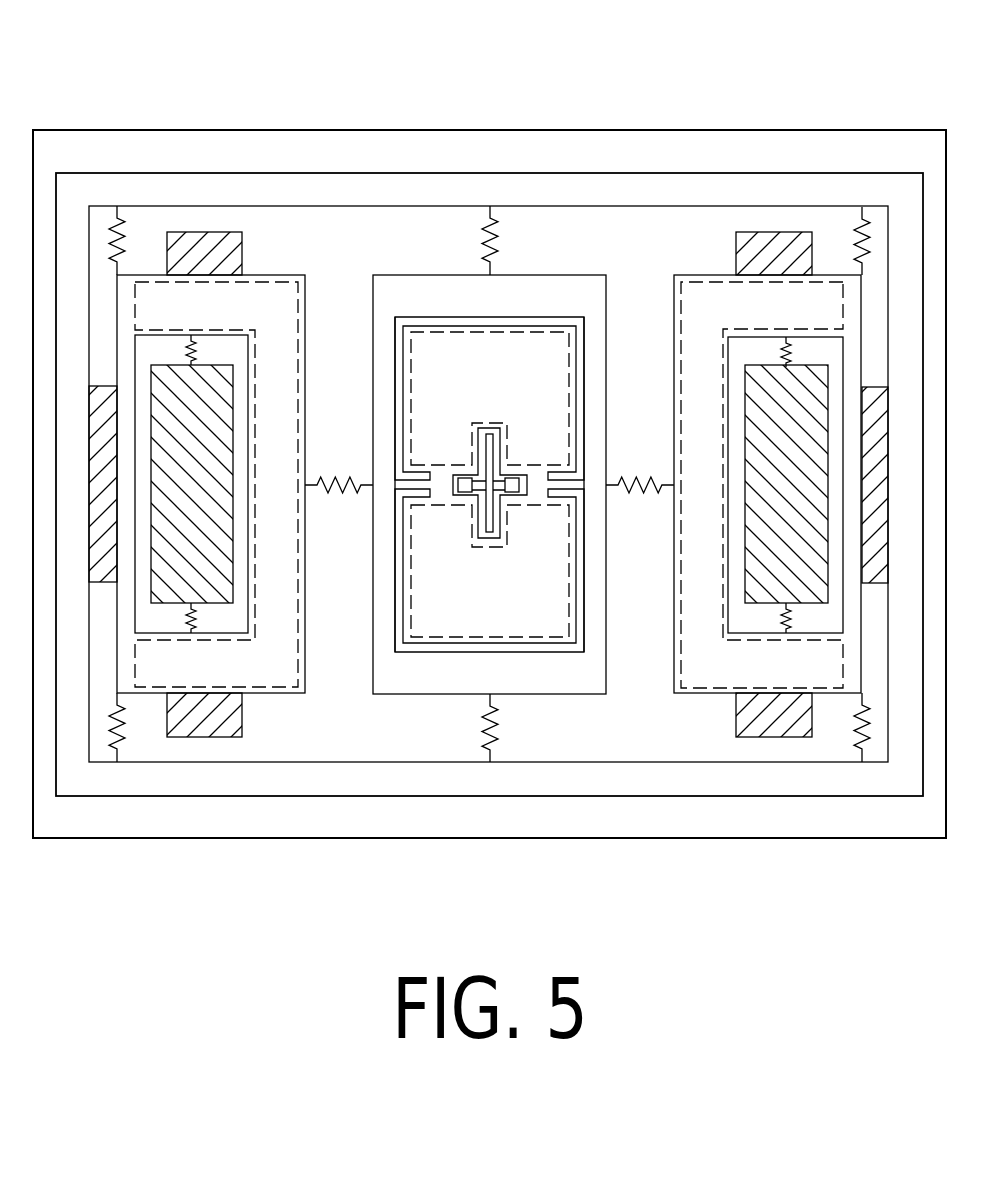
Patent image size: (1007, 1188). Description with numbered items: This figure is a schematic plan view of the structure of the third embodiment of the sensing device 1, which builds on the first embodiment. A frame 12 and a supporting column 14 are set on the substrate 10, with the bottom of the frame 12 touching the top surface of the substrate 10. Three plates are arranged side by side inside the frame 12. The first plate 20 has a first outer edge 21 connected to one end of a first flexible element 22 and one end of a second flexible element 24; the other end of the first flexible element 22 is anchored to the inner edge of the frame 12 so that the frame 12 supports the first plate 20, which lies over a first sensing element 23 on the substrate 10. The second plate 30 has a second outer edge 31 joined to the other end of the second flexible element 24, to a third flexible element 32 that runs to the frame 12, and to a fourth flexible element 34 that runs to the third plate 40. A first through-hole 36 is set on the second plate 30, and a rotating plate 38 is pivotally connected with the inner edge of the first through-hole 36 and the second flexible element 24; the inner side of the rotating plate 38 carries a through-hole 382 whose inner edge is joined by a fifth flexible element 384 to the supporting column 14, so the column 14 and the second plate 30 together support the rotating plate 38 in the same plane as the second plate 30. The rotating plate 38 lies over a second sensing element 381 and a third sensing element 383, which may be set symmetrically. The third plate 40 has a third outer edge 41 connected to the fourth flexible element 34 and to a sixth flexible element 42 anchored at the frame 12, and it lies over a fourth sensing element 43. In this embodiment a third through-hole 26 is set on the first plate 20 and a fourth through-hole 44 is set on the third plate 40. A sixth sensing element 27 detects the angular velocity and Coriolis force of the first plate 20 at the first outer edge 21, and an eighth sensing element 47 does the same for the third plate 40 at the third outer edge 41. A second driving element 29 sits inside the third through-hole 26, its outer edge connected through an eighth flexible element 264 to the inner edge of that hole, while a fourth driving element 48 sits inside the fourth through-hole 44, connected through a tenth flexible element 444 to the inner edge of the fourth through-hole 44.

The mass-spring system 1 is at (870, 45).
The substrate 10 is at (80, 130).
The frame 12 is at (177, 173).
The supporting column 14 is at (512, 477).
The first plate 20 is at (277, 275).
The first outer edge 21 is at (307, 317).
The first flexible element 22 is at (127, 245).
The first sensing element 23 is at (278, 687).
The second flexible element 24 is at (345, 490).
The third through-hole 26 is at (247, 375).
The sixth sensing element 27 is at (207, 232).
The second driving element 29 is at (170, 605).
The second plate 30 is at (412, 275).
The second outer edge 31 is at (607, 317).
The third flexible element 32 is at (497, 253).
The fourth flexible element 34 is at (635, 490).
The first through-hole 36 is at (450, 320).
The rotating plate 38 is at (452, 640).
The third plate 40 is at (713, 275).
The third outer edge 41 is at (672, 652).
The sixth flexible element 42 is at (850, 248).
The fourth sensing element 43 is at (698, 688).
The fourth through-hole 44 is at (733, 377).
The eighth sensing element 47 is at (772, 232).
The fourth driving element 48 is at (807, 605).
The eighth flexible element 264 is at (200, 620).
The second sensing element 381 is at (545, 640).
The third through-hole 382 is at (478, 525).
The third sensing element 383 is at (540, 333).
The fifth flexible element 384 is at (482, 468).
The tenth flexible element 444 is at (785, 620).